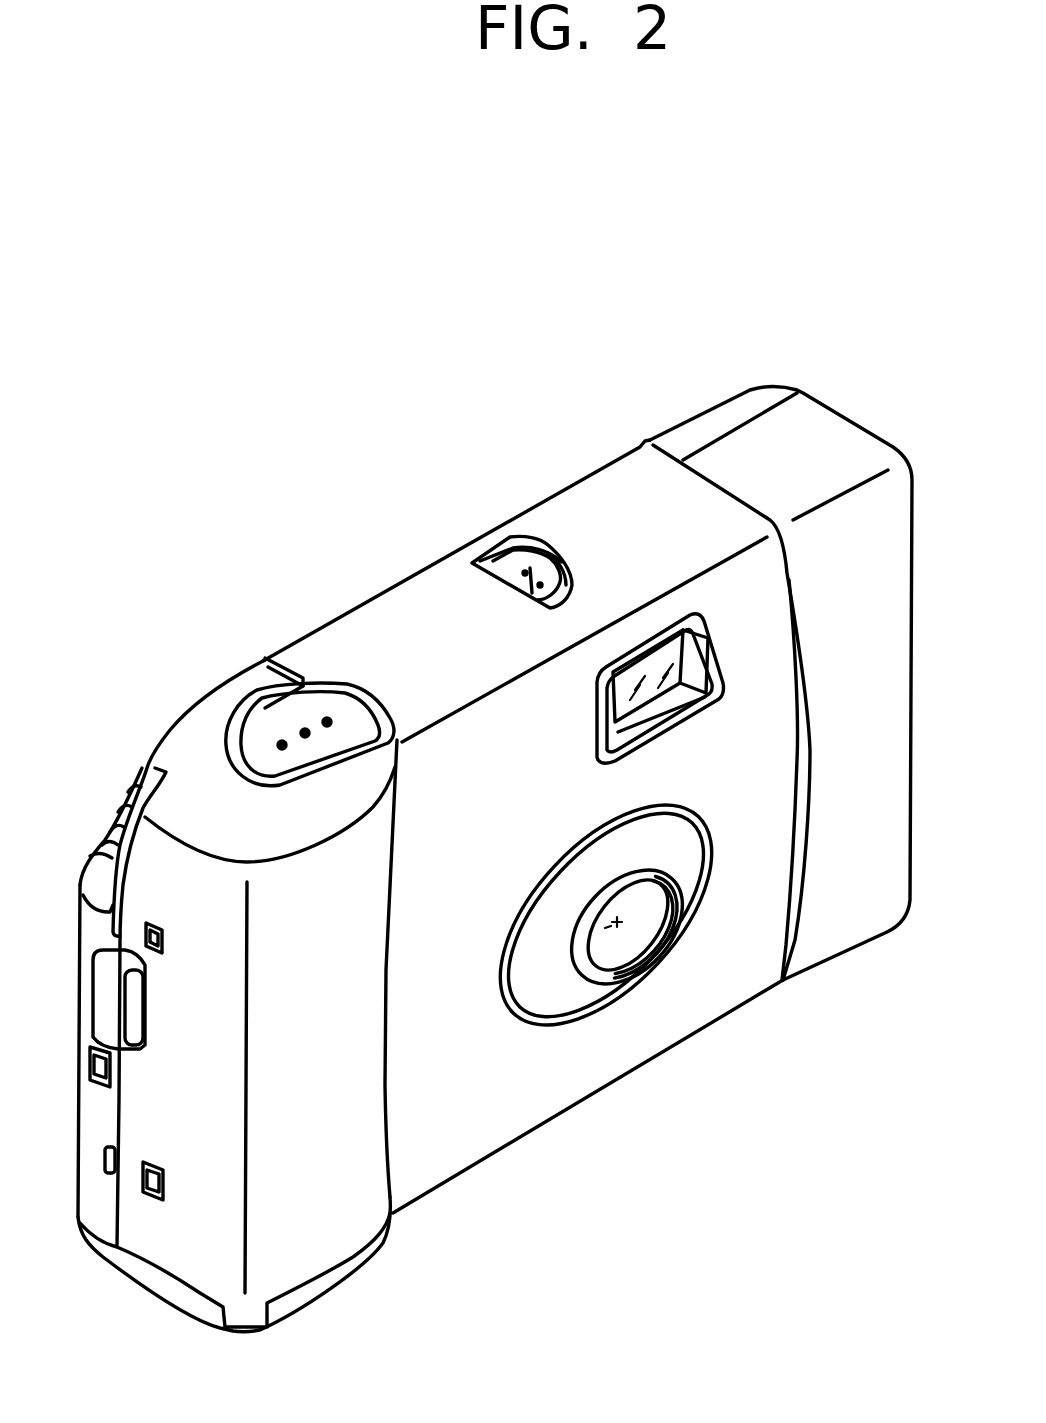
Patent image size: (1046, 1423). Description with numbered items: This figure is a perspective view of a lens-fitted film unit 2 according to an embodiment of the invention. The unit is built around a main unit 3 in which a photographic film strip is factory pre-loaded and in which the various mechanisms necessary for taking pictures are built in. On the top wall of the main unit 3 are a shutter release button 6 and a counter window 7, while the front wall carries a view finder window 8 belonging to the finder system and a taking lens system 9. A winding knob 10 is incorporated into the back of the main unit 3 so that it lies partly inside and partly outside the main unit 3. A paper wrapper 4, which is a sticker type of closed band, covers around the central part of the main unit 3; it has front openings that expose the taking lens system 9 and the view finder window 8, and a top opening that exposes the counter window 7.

The lens-fitted film unit 2 is at (655, 414).
The main unit 3 is at (817, 984).
The paper wrapper 4 is at (373, 613).
The shutter release button 6 is at (260, 737).
The counter window 7 is at (572, 563).
The view finder window 8 is at (595, 707).
The taking lens system 9 is at (603, 915).
The winding knob 10 is at (125, 778).